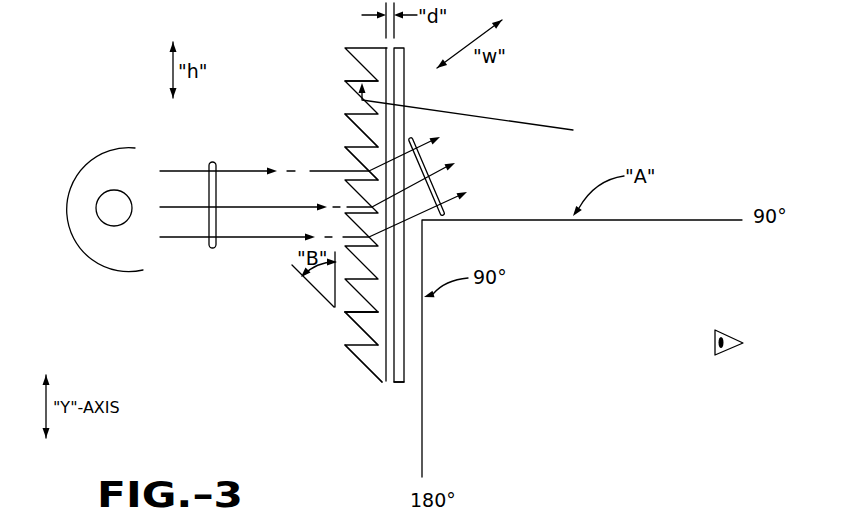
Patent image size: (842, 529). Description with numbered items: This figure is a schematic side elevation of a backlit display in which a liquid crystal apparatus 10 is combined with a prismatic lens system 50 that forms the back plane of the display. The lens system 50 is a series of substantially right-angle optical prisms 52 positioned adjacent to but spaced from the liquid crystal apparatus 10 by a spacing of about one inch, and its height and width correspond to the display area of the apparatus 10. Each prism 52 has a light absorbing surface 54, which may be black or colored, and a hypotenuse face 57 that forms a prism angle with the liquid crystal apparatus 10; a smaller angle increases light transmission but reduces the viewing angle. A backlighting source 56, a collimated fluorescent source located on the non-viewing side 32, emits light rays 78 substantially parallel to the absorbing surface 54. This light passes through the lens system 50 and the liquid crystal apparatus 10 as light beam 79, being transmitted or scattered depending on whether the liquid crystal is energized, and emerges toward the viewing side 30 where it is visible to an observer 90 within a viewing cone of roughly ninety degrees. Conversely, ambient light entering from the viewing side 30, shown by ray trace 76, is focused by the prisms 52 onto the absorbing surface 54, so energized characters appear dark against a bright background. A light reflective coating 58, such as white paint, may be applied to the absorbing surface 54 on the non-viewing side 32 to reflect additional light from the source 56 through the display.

The liquid crystal apparatus 10 is at (406, 40).
The viewing side 30 is at (634, 76).
The non-viewing side 32 is at (106, 341).
The prismatic lens system 50 is at (362, 37).
The right-angle optical prism 52 is at (352, 122).
The light absorbing surface 54 is at (346, 82).
The backlighting source 56 is at (95, 163).
The hypotenuse face 57 is at (350, 152).
The light reflective coating 58 is at (348, 311).
The ray trace 76 is at (545, 126).
The light rays 78 is at (213, 162).
The light beam 79 is at (447, 210).
The observer 90 is at (733, 337).